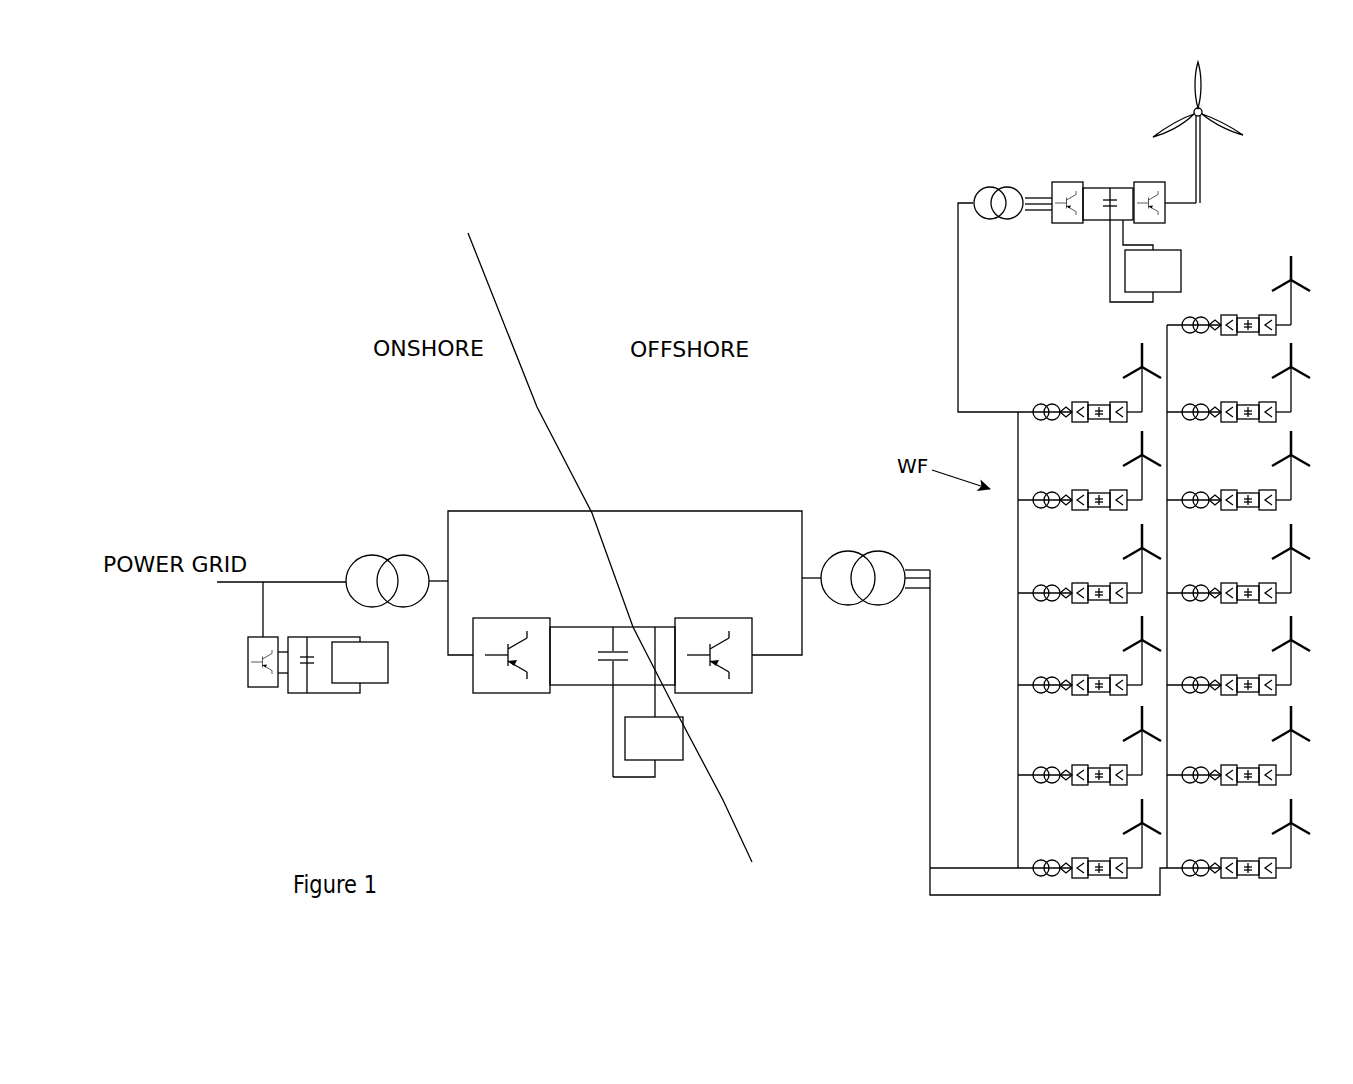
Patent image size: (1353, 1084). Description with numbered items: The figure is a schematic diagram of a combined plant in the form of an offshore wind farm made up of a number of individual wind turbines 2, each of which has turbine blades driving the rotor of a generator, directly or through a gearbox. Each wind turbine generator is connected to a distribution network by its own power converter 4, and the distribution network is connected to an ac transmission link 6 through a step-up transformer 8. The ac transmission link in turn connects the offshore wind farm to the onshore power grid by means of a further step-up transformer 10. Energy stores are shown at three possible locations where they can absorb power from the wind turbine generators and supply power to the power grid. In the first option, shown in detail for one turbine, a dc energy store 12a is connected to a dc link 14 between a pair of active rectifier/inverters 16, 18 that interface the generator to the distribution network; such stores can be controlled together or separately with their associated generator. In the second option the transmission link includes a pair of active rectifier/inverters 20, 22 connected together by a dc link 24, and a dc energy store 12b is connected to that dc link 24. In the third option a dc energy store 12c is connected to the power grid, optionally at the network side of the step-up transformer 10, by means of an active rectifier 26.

The wind turbine 2 is at (1227, 154).
The power converter 4 is at (1098, 177).
The ac transmission link 6 is at (656, 494).
The step-up transformer 8 is at (853, 539).
The step-up transformer 10 is at (394, 550).
The dc energy store 12a is at (1181, 271).
The dc energy store 12b is at (665, 762).
The dc energy store 12c is at (368, 684).
The dc link 14 is at (1095, 234).
The active rectifier/inverter 16 is at (1060, 182).
The active rectifier/inverter 18 is at (1148, 182).
The active rectifier/inverter 20 is at (508, 694).
The active rectifier/inverter 22 is at (713, 694).
The dc link 24 is at (580, 620).
The active rectifier 26 is at (264, 689).